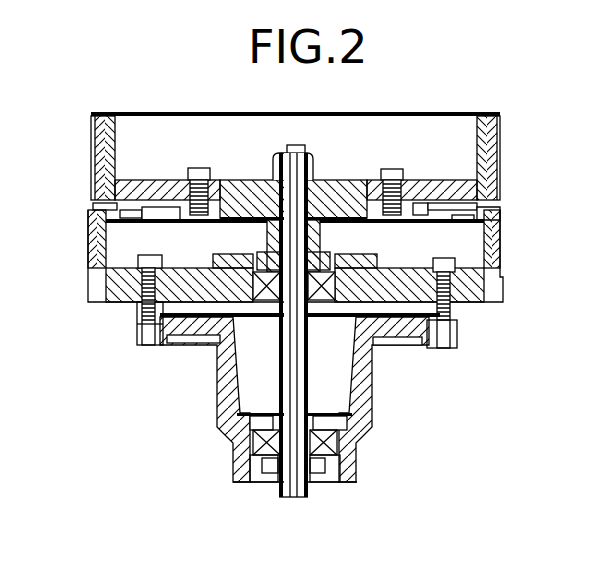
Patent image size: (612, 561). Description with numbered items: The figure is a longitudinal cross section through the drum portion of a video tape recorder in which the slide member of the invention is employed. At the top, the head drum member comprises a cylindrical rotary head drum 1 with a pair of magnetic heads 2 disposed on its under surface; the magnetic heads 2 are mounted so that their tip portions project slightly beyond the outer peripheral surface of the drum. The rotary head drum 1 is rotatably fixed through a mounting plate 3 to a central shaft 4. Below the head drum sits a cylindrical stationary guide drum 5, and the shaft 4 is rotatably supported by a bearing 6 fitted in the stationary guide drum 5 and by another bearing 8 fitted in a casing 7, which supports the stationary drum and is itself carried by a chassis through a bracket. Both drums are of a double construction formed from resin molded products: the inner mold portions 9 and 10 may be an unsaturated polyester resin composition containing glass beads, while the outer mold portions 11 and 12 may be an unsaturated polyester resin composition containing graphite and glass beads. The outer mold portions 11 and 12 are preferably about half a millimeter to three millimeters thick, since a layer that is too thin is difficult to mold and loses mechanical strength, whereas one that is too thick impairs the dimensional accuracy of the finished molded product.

The rotary head drum 1 is at (503, 145).
The magnetic heads 2 is at (100, 204).
The mounting plate 3 is at (343, 189).
The shaft 4 is at (298, 334).
The stationary guide drum 5 is at (503, 262).
The bearing 6 is at (265, 301).
The casing 7 is at (366, 384).
The bearing 8 is at (328, 458).
The inner mold portion 9 is at (481, 118).
The inner mold portion 10 is at (126, 302).
The outer mold portion 11 is at (92, 144).
The outer mold portion 12 is at (90, 268).